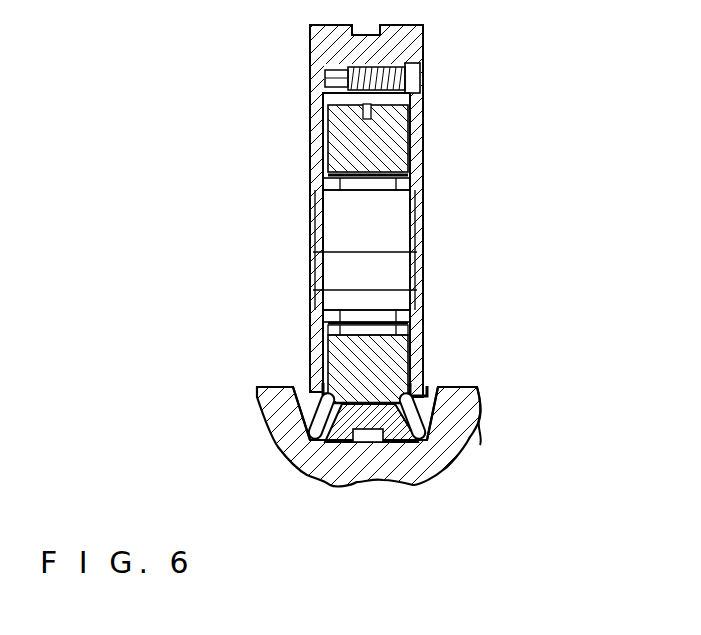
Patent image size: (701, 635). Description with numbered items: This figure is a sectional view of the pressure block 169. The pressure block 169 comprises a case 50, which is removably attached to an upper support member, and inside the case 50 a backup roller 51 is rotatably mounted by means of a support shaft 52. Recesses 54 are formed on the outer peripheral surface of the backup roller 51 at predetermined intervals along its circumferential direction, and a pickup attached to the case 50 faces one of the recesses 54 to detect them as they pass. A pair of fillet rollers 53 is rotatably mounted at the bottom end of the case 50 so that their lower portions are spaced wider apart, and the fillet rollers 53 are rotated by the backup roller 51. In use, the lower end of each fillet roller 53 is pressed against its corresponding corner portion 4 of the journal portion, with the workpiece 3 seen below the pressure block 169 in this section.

The pressure block 169 is at (434, 269).
The case 50 is at (321, 122).
The backup roller 51 is at (378, 338).
The support shaft 52 is at (333, 237).
The fillet rollers 53 is at (420, 387).
The recesses 54 is at (404, 100).
The base 3 is at (481, 422).
The corner portion 4 is at (437, 470).